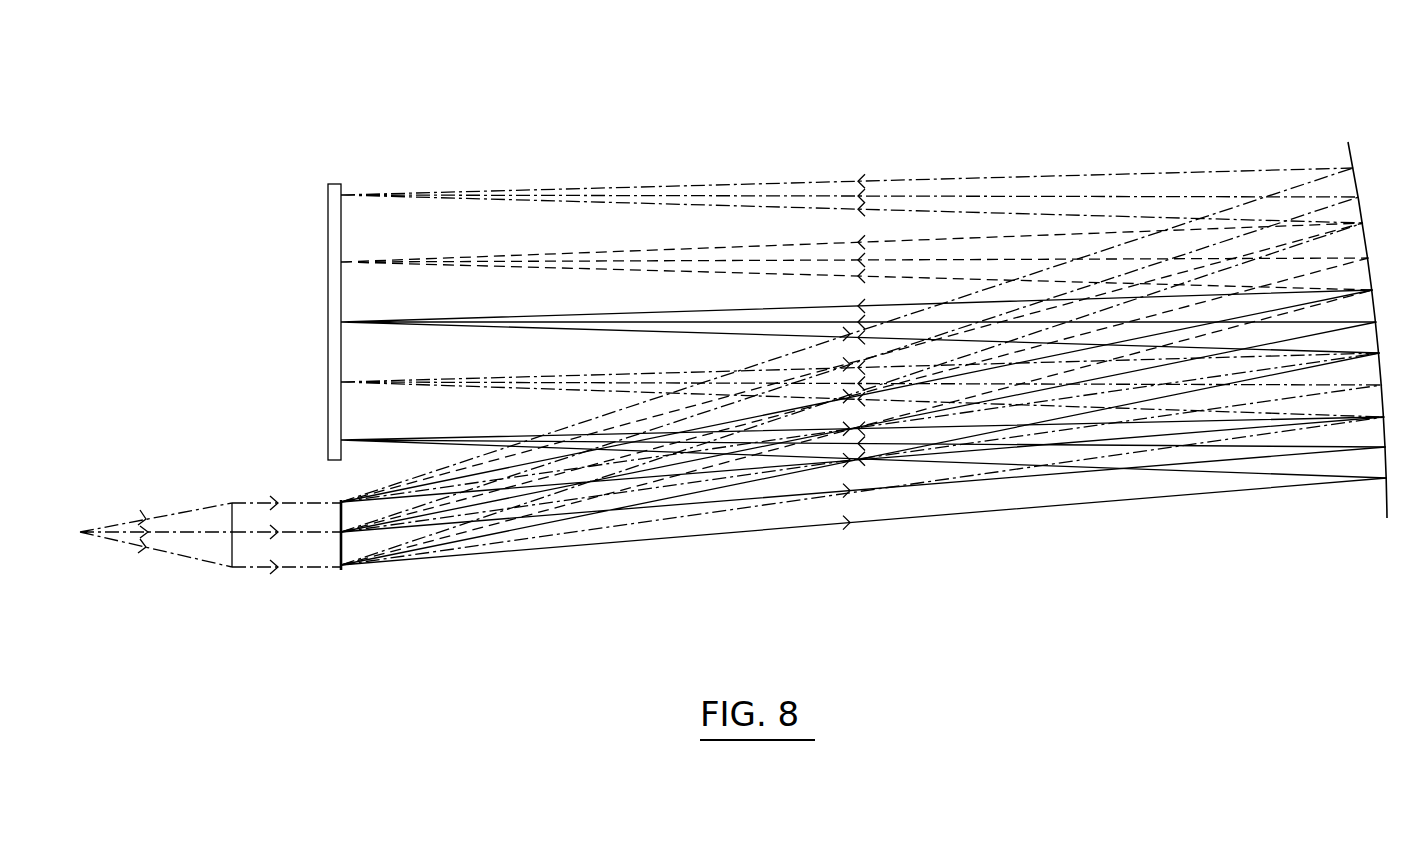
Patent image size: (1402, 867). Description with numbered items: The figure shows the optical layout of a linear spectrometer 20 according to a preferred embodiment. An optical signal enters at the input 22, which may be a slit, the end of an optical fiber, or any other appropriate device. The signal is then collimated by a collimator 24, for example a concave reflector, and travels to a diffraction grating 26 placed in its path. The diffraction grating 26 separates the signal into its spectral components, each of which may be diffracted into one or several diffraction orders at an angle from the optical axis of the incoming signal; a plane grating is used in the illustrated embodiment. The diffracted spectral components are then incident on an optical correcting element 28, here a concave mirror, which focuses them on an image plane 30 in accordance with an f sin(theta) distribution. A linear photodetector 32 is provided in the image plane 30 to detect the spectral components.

The linear spectrometer 20 is at (787, 146).
The input 22 is at (80, 536).
The collimator 24 is at (232, 570).
The diffraction grating 26 is at (342, 572).
The optical correcting element 28 is at (1352, 165).
The image plane 30 is at (341, 186).
The linear photodetector 32 is at (334, 200).